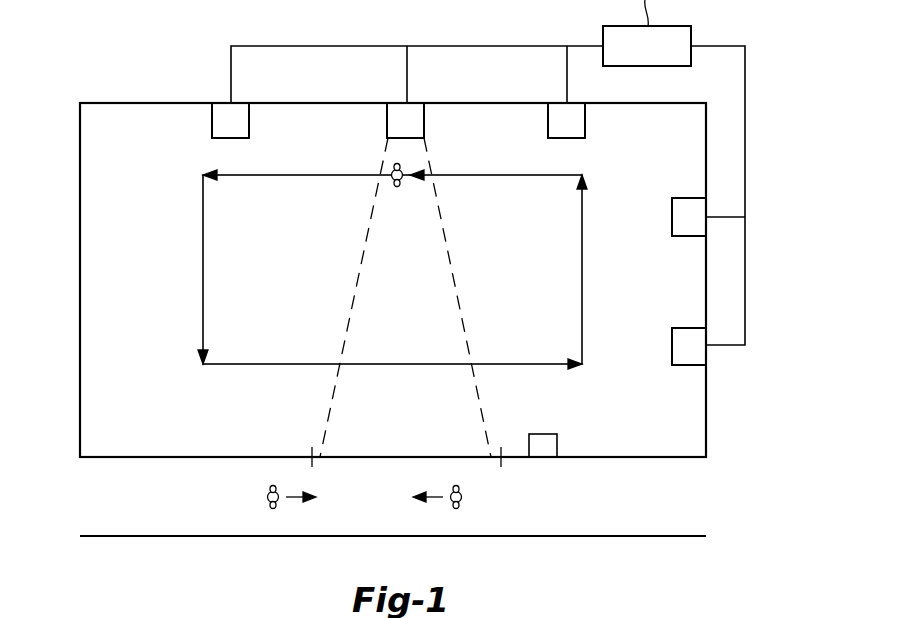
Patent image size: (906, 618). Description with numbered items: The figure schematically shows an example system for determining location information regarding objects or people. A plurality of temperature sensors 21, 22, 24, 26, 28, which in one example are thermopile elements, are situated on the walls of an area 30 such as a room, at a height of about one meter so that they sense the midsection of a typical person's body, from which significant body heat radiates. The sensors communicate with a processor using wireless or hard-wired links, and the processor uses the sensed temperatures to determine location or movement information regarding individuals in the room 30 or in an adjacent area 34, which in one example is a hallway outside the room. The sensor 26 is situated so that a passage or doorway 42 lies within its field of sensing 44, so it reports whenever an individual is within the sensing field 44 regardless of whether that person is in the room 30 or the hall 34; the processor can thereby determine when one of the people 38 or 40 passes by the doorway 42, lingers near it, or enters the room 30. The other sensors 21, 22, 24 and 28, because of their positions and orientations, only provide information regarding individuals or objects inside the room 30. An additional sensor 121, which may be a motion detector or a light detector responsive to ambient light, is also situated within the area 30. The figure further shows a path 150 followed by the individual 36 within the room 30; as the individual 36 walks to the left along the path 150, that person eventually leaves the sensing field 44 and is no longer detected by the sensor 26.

The area 30 is at (97, 198).
The adjacent area 34 is at (158, 500).
The temperature sensor 28 is at (250, 131).
The temperature sensor 26 is at (425, 131).
The temperature sensor 24 is at (586, 131).
The temperature sensor 22 is at (682, 198).
The temperature sensor 21 is at (682, 328).
The path 150 is at (284, 186).
The individual 36 is at (392, 172).
The field of sensing 44 is at (455, 270).
The doorway 42 is at (313, 462).
The additional sensor 121 is at (544, 434).
The individual 38 is at (266, 496).
The individual 40 is at (463, 497).